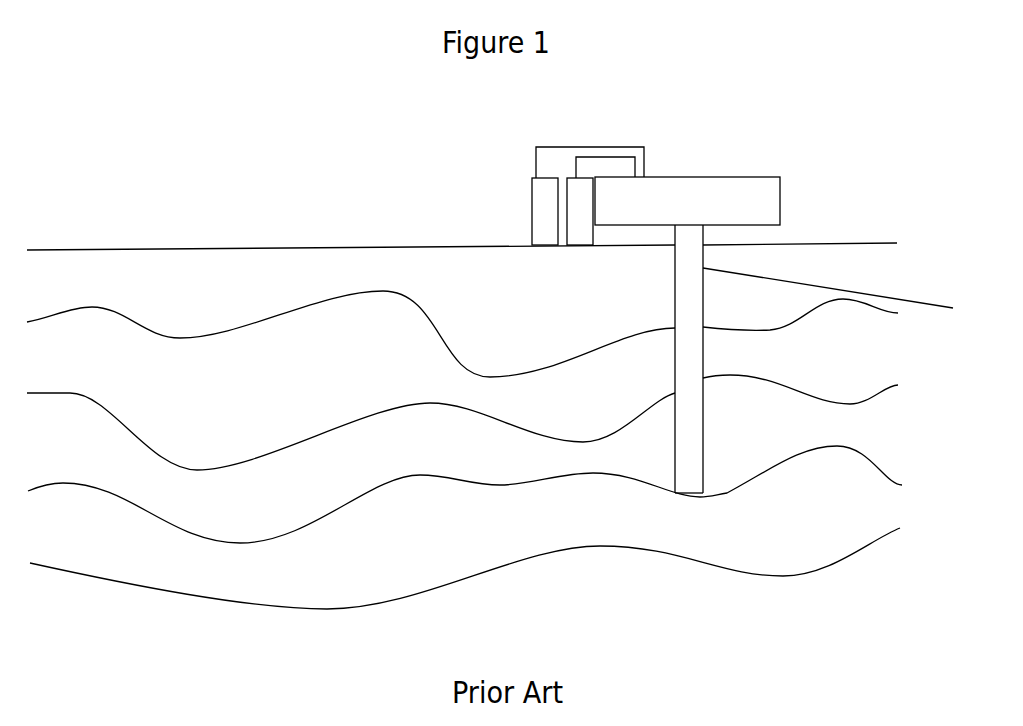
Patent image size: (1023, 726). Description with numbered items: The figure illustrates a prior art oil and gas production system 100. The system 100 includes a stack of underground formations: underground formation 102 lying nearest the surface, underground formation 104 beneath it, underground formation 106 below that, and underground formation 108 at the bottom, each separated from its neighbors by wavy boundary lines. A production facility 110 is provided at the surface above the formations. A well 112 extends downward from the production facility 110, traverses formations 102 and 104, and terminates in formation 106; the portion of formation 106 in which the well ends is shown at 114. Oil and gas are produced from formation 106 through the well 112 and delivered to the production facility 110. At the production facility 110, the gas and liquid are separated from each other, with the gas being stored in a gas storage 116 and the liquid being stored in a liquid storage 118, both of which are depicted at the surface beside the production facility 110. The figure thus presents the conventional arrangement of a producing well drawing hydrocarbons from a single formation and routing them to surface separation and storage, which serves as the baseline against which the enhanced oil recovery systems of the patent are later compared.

The prior art system 100 is at (374, 130).
The underground formation 102 is at (462, 310).
The underground formation 104 is at (462, 403).
The underground formation 106 is at (465, 473).
The underground formation 108 is at (465, 543).
The production facility 110 is at (705, 211).
The well 112 is at (849, 296).
The portion of formation 114 is at (658, 463).
The gas storage 116 is at (577, 197).
The liquid storage 118 is at (547, 198).